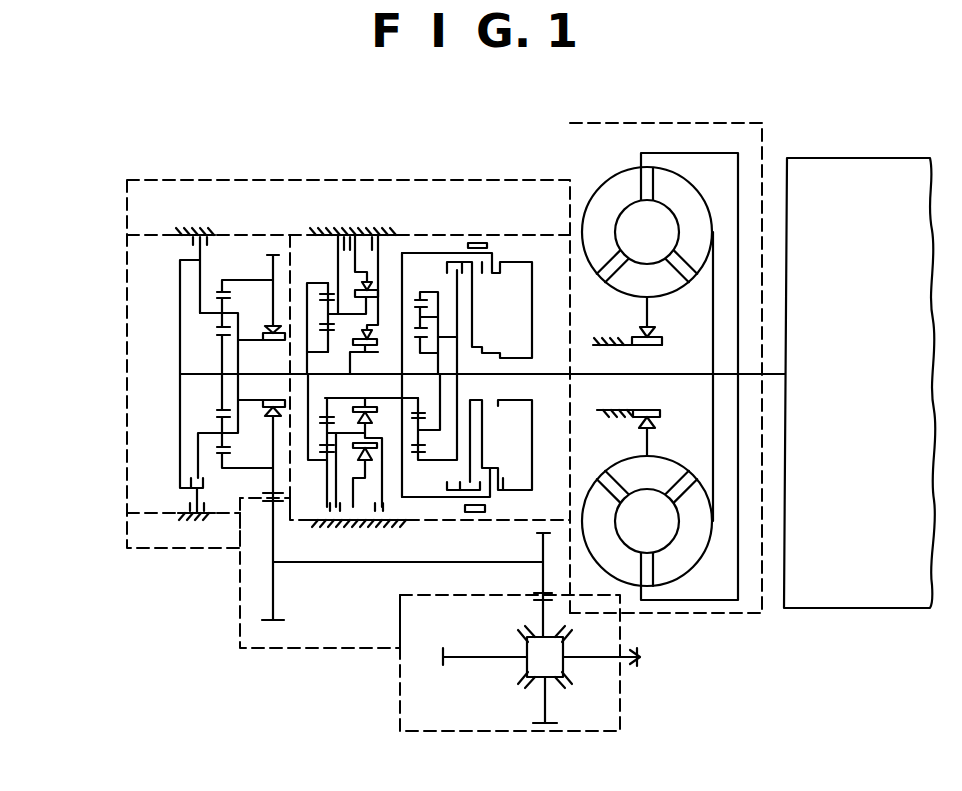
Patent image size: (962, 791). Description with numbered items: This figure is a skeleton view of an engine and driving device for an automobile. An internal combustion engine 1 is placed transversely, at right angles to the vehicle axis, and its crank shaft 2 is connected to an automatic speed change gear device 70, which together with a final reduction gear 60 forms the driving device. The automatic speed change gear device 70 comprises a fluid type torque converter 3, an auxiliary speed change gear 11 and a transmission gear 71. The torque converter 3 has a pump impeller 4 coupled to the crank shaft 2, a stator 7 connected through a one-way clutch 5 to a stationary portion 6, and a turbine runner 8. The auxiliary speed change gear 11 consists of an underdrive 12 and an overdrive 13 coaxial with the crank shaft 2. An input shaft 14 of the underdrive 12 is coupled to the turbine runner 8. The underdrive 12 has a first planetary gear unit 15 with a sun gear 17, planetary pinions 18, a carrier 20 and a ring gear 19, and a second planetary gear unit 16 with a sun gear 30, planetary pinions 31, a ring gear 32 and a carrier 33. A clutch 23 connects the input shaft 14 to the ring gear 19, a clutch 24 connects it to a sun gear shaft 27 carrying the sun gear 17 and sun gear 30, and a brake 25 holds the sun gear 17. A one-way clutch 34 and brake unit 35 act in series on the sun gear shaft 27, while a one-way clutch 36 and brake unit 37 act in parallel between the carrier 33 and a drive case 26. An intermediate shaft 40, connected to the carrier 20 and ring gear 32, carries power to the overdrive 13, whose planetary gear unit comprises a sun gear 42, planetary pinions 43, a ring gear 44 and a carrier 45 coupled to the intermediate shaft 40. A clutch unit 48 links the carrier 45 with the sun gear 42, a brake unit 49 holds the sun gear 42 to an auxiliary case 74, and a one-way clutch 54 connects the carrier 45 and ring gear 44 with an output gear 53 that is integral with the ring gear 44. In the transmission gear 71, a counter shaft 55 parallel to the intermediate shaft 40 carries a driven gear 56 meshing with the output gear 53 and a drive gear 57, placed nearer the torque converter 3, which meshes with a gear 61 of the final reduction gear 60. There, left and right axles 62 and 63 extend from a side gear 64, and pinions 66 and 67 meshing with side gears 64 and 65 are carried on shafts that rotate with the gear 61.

The internal combustion engine 1 is at (864, 149).
The crank shaft 2 is at (775, 372).
The fluid type torque converter 3 is at (678, 115).
The pump impeller 4 is at (626, 185).
The one-way clutch 5 is at (640, 330).
The stationary portion 6 is at (612, 345).
The stator 7 is at (670, 293).
The turbine runner 8 is at (697, 210).
The auxiliary speed change gear 11 is at (363, 173).
The underdrive 12 is at (547, 232).
The overdrive 13 is at (250, 231).
The input shaft 14 is at (552, 373).
The first planetary gear unit 15 is at (433, 280).
The second planetary gear unit 16 is at (330, 283).
The sun gear 17 is at (425, 352).
The planetary pinions 18 is at (426, 314).
The ring gear 19 is at (420, 292).
The carrier 20 is at (457, 337).
The clutch 23 is at (453, 263).
The clutch 24 is at (505, 273).
The brake 25 is at (483, 243).
The drive case 26 is at (360, 235).
The sun gear shaft 27 is at (371, 386).
The sun gear 30 is at (320, 362).
The planetary pinions 31 is at (318, 300).
The ring gear 32 is at (336, 285).
The carrier 33 is at (340, 438).
The one-way clutch 34 is at (370, 343).
The brake unit 35 is at (390, 233).
The one-way clutch 36 is at (372, 275).
The brake unit 37 is at (340, 235).
The intermediate shaft 40 is at (380, 392).
The sun gear 42 is at (226, 352).
The planetary pinions 43 is at (222, 330).
The ring gear 44 is at (226, 285).
The carrier 45 is at (200, 307).
The clutch unit 48 is at (182, 266).
The brake unit 49 is at (193, 242).
The output gear 53 is at (272, 267).
The one-way clutch 54 is at (270, 319).
The counter shaft 55 is at (372, 562).
The driven gear 56 is at (274, 580).
The drive gear 57 is at (541, 548).
The final reduction gear 60 is at (622, 700).
The gear 61 is at (541, 616).
The left axle 62 is at (470, 655).
The right axle 63 is at (605, 657).
The side gear 64 is at (522, 672).
The side gear 65 is at (568, 641).
The pinion 66 is at (545, 657).
The pinion 67 is at (548, 698).
The automatic speed change gear device 70 is at (490, 132).
The transmission gear 71 is at (316, 655).
The auxiliary case 74 is at (197, 230).